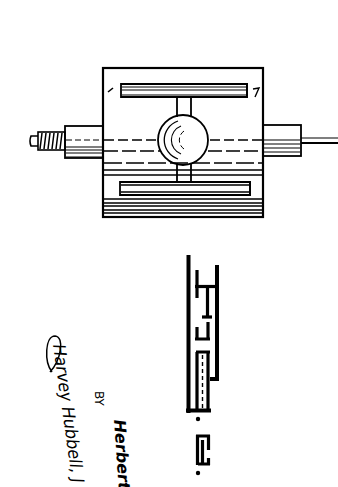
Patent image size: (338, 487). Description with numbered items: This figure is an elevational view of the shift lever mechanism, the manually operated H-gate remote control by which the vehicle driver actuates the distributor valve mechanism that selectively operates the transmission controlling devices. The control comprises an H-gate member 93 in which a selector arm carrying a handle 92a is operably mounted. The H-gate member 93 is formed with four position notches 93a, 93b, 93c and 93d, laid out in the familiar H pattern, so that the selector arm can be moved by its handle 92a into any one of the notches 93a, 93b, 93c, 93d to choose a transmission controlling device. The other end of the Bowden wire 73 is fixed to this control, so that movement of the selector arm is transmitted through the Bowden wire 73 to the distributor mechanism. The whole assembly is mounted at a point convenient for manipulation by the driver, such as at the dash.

The housing block 93 is at (110, 169).
The upper flange of conductor bar 93a is at (122, 84).
The right end of upper flange 93b is at (247, 85).
The lower flange left end 93c is at (120, 195).
The lower flange right end 93d is at (249, 196).
The ball contact 92a is at (204, 136).
The threaded plug terminal 73 is at (32, 142).